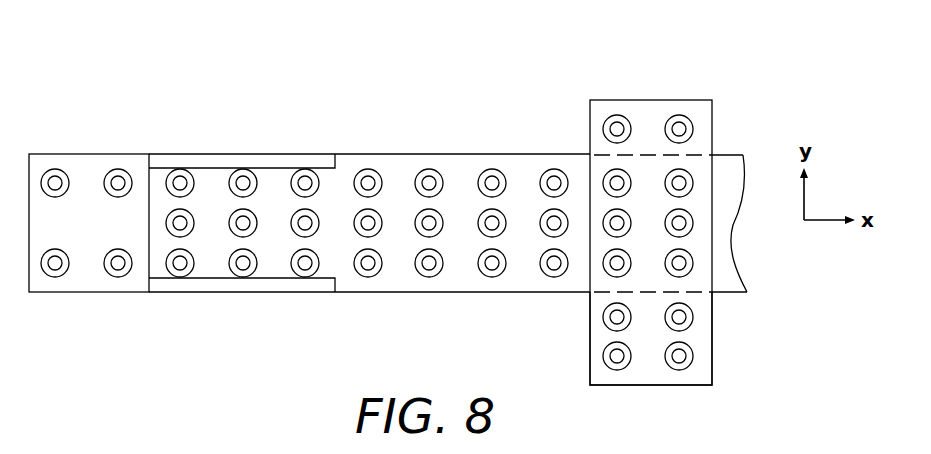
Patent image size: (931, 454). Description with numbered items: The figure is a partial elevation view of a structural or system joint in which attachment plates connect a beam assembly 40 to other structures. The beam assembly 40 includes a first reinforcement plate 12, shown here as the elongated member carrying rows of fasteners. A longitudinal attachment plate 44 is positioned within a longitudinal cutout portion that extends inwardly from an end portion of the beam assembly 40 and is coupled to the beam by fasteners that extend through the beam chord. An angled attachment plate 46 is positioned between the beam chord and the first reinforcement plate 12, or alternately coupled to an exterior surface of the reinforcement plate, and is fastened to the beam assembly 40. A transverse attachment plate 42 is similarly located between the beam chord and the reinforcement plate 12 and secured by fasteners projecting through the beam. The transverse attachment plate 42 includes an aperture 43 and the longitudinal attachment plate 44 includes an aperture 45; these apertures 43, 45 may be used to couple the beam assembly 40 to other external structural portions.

The first reinforcement plate 12 is at (445, 154).
The beam assembly 40 is at (697, 63).
The transverse attachment plate 42 is at (712, 335).
The aperture 43 is at (617, 358).
The longitudinal attachment plate 44 is at (75, 154).
The aperture 45 is at (55, 262).
The angled attachment plate 46 is at (230, 162).